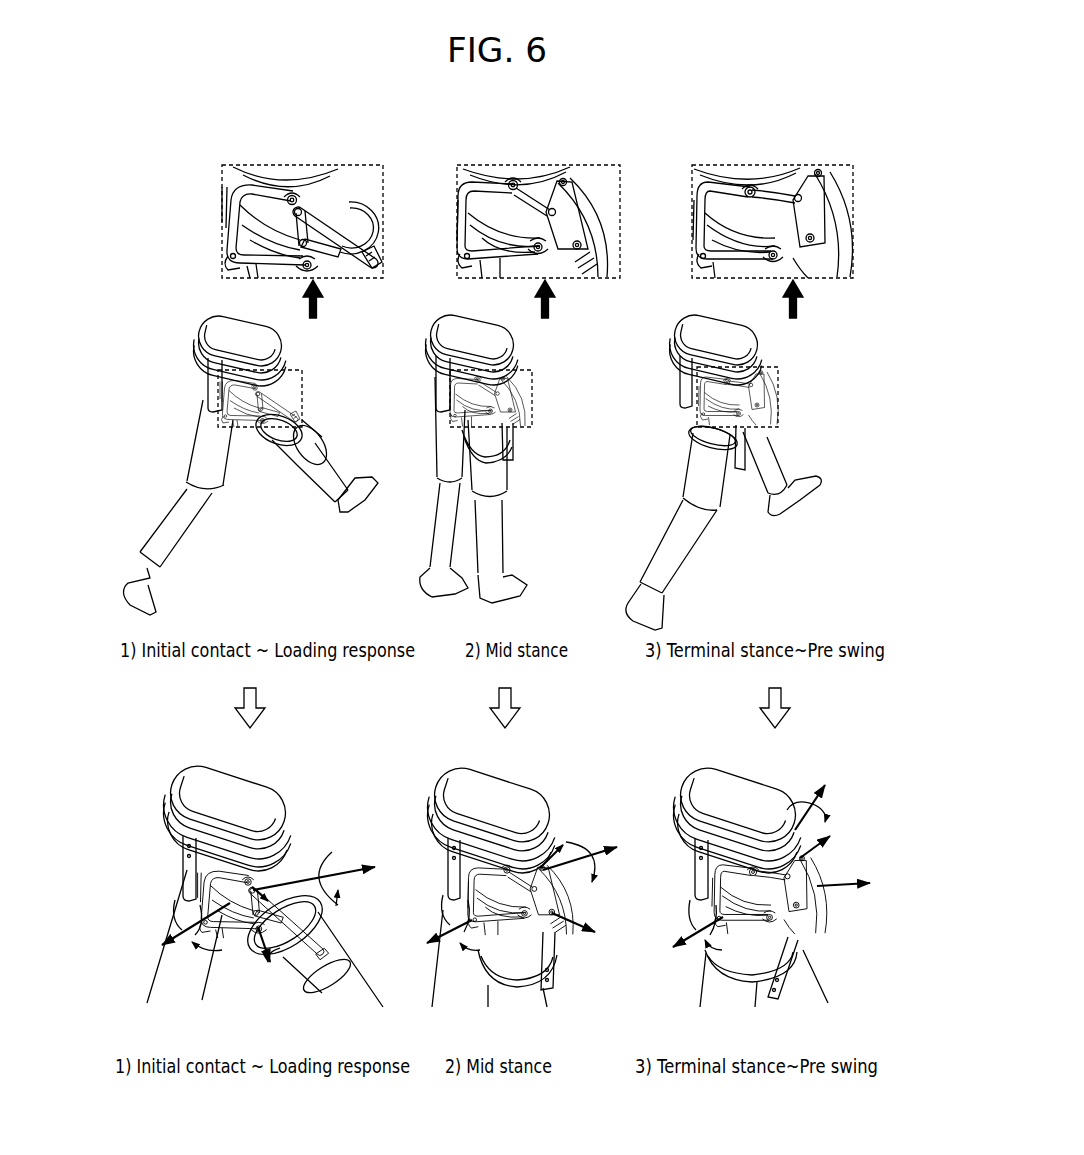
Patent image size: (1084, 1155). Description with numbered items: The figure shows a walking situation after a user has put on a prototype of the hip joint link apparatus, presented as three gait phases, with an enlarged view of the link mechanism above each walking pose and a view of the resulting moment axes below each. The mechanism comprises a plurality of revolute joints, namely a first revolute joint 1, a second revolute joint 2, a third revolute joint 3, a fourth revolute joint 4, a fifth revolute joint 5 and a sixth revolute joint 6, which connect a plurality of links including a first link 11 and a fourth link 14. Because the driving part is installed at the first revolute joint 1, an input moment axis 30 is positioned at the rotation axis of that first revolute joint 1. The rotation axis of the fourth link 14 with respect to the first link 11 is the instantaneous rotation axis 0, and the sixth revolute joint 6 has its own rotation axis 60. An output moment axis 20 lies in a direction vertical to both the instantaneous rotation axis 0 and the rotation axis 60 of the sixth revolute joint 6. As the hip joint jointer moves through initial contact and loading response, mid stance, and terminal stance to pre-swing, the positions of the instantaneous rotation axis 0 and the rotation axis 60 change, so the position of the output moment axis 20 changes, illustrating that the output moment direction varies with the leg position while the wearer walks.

The instantaneous rotation axis 0 is at (268, 967).
The first revolute joint 1 is at (230, 257).
The second revolute joint 2 is at (290, 196).
The third revolute joint 3 is at (327, 253).
The fourth revolute joint 4 is at (368, 243).
The fifth revolute joint 5 is at (303, 268).
The sixth revolute joint 6 is at (300, 209).
The first link 11 is at (187, 862).
The fourth link 14 is at (323, 920).
The output moment axis 20 is at (343, 867).
The input moment axis 30 is at (167, 947).
The rotation axis of the sixth revolute joint 60 is at (264, 865).